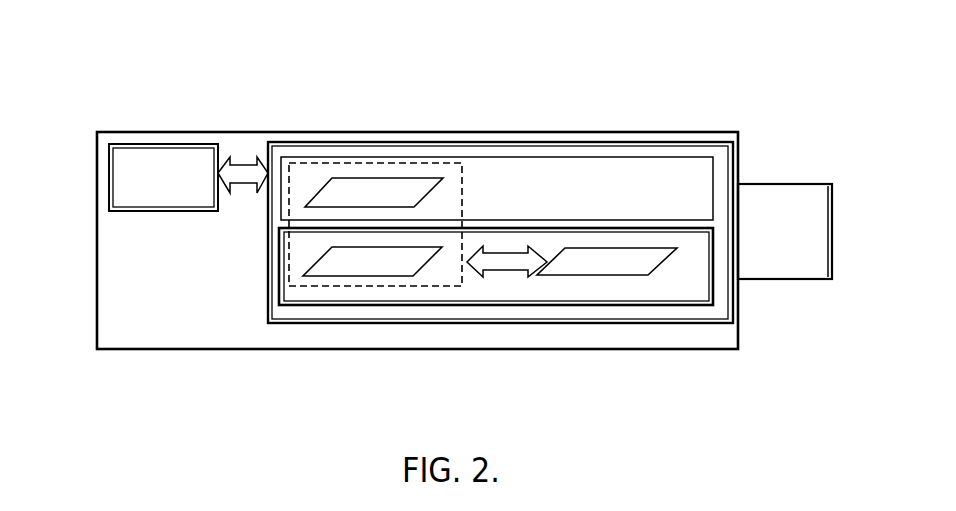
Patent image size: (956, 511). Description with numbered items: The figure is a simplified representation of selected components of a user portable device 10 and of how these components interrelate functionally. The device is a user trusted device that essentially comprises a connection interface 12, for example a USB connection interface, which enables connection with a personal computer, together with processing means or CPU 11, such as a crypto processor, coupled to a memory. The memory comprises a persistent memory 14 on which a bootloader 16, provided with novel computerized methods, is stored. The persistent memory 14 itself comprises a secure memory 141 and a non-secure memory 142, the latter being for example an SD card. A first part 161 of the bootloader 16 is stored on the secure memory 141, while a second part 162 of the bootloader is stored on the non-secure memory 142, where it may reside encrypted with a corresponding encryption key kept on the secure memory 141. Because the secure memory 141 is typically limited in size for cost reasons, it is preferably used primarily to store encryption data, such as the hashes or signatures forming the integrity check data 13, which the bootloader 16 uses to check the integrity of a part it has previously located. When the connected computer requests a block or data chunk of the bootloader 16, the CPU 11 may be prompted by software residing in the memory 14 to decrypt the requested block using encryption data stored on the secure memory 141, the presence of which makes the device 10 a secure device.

The user portable device 10 is at (158, 337).
The CPU 11 is at (119, 143).
The connection interface 12 is at (822, 178).
The integrity check data 13 is at (578, 275).
The persistent memory 14 is at (318, 142).
The secure memory 141 is at (637, 305).
The non-secure memory 142 is at (661, 157).
The bootloader 16 is at (460, 286).
The first part of the bootloader 161 is at (357, 276).
The second part of the bootloader 162 is at (422, 178).